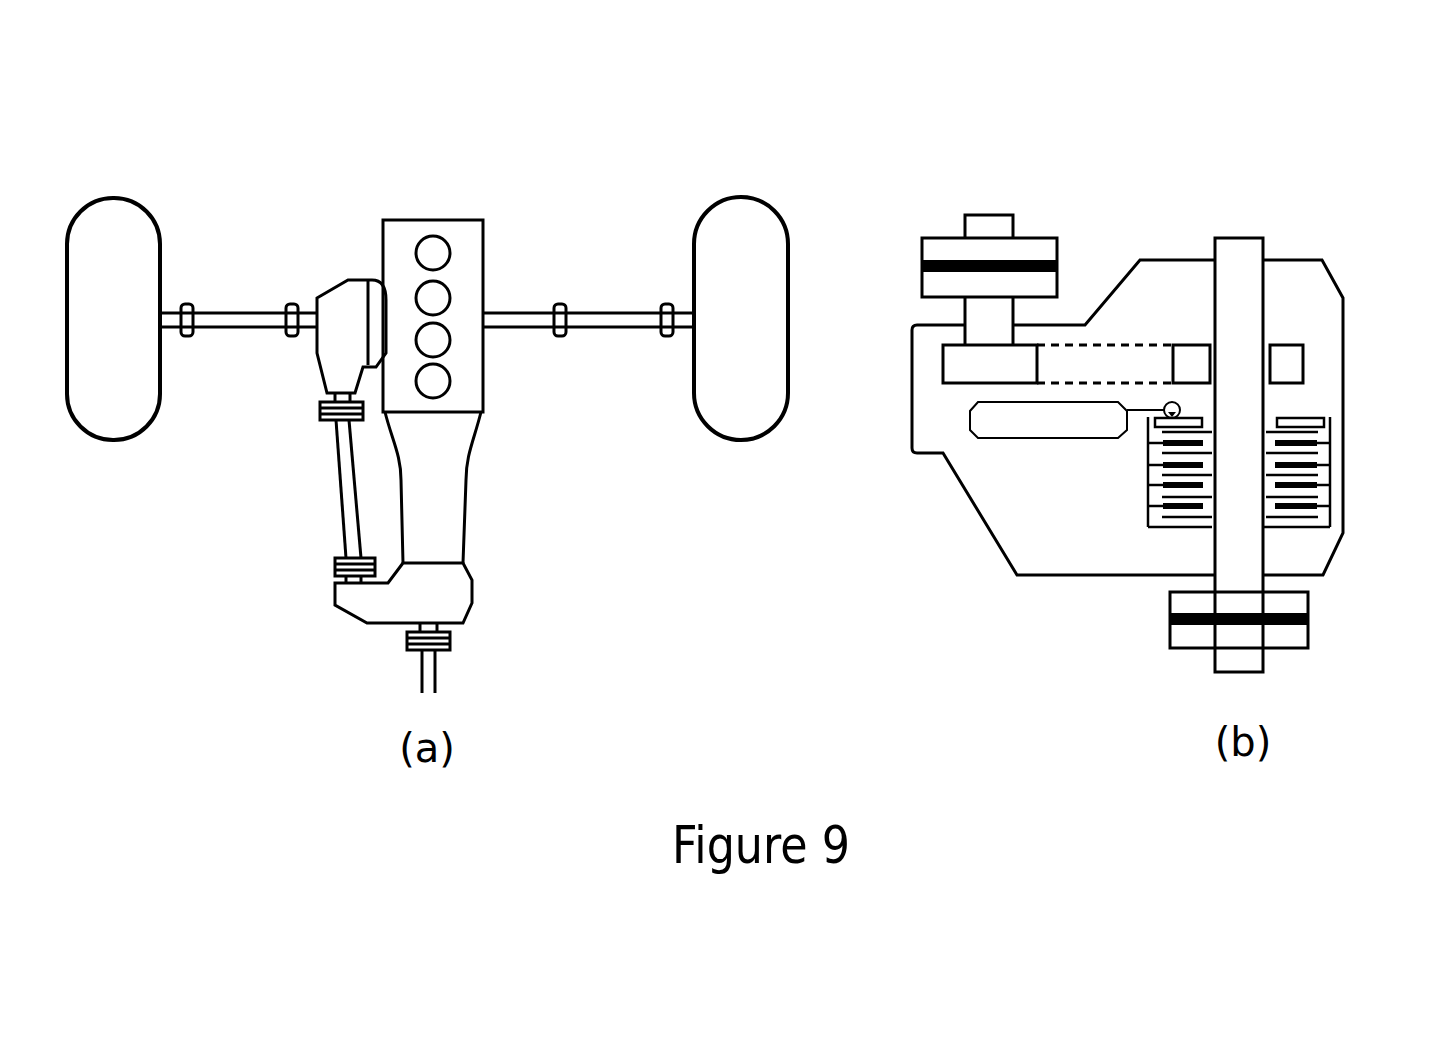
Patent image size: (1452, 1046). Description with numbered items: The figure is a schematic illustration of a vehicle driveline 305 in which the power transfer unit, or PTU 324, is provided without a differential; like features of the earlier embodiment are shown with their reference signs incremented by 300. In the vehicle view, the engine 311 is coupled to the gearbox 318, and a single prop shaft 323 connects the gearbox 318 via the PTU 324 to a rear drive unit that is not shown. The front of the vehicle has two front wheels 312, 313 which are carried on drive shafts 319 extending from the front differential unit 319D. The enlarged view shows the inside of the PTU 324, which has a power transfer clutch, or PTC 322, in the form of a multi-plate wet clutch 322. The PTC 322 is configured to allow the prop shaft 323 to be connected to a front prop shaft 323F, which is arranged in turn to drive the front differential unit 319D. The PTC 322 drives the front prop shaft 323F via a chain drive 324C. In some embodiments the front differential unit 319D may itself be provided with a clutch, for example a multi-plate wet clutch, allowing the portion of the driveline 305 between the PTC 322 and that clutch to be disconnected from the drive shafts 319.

The reference sign increment 300 is at (604, 134).
The driveline 305 is at (622, 555).
The engine 311 is at (466, 240).
The front wheel 312 is at (116, 230).
The front wheel 313 is at (738, 232).
The gearbox 318 is at (452, 512).
The drive shafts 319 is at (246, 318).
The front differential unit 319D is at (346, 280).
The power transfer clutch 322 is at (1322, 456).
The prop shaft 323 is at (430, 663).
The front prop shaft 323F is at (345, 476).
The power transfer unit 324 is at (476, 585).
The chain drive 324C is at (1063, 344).